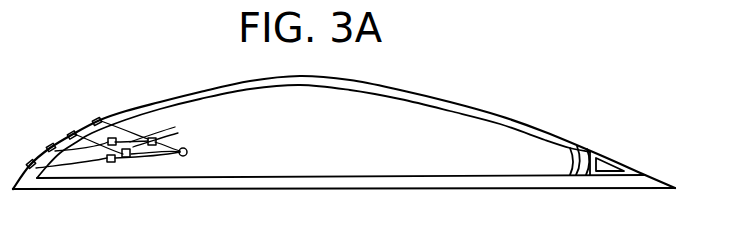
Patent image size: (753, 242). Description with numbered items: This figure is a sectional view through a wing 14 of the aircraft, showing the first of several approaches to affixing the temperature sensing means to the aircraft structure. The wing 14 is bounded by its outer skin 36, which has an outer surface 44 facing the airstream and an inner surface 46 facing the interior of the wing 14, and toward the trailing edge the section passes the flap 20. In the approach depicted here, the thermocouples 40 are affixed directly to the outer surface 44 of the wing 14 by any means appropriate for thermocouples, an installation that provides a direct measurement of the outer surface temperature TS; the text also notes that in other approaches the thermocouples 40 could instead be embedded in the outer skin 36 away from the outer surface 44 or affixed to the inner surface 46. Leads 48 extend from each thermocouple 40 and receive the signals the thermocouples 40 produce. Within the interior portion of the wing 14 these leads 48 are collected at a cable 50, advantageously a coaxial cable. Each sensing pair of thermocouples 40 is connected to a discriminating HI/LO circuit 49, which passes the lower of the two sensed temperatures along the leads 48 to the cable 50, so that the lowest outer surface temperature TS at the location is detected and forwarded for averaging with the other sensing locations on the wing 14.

The wing 14 is at (345, 116).
The flap 20 is at (627, 158).
The outer skin 36 is at (344, 116).
The outer surface 44 is at (395, 90).
The inner surface 46 is at (370, 98).
The thermocouple 40 is at (120, 142).
The outer surface temperature TS is at (66, 129).
The leads 48 is at (155, 144).
The discriminating HI/LO circuit 49 is at (151, 146).
The cable 50 is at (188, 152).